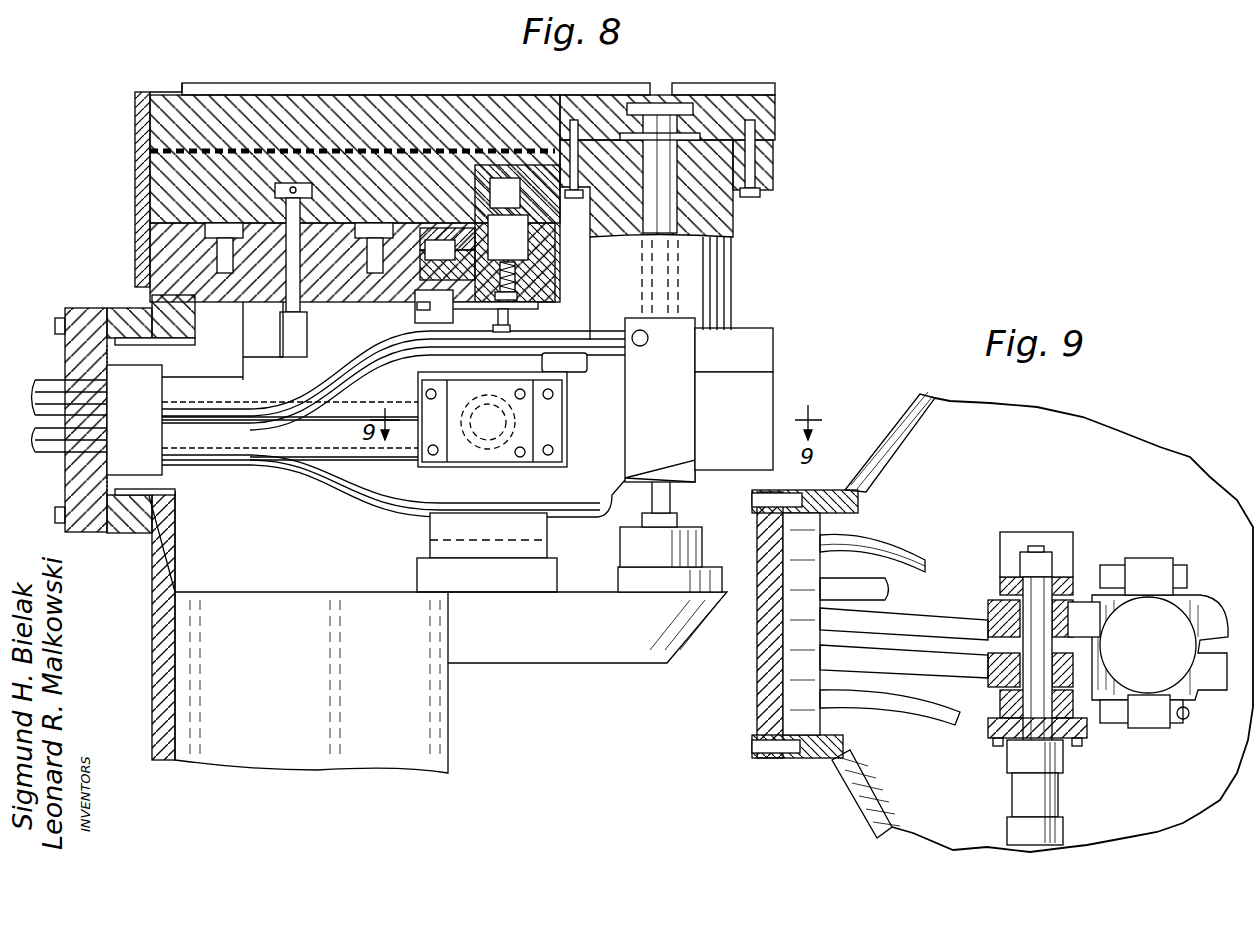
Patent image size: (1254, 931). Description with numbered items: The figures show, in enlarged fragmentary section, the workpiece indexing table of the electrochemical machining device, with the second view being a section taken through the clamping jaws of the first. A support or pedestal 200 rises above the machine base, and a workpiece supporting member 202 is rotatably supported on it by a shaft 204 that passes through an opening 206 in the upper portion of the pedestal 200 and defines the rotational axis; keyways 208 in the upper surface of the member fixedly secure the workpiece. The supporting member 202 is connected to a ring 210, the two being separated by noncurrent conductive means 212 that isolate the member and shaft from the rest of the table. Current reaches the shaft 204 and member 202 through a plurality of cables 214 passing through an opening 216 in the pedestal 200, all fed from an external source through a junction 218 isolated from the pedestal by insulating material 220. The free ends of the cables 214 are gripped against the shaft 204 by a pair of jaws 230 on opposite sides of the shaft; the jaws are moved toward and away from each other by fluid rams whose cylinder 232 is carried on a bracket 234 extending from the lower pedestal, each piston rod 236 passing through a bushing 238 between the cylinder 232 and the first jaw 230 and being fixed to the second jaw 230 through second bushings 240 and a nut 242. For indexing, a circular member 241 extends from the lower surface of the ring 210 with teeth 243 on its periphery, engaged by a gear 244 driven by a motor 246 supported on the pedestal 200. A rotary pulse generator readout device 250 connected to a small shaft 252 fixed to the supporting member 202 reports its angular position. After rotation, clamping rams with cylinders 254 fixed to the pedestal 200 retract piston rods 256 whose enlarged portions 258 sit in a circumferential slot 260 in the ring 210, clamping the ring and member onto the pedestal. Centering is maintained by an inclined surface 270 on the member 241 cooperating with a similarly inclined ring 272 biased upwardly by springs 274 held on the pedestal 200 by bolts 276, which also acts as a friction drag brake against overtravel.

In FIG. 8, the support or pedestal 200 is at (178, 548).
In FIG. 9, the support or pedestal 200 is at (918, 410).
In FIG. 8, the workpiece supporting member 202 is at (205, 72).
In FIG. 8, the shaft 204 is at (733, 267).
In FIG. 8, the opening 206 is at (603, 197).
In FIG. 8, the keyways 208 is at (742, 80).
In FIG. 8, the ring 210 is at (240, 216).
In FIG. 8, the noncurrent conductive means 212 is at (150, 152).
In FIG. 8, the cables 214 is at (185, 393).
In FIG. 9, the cables 214 is at (878, 545).
In FIG. 8, the opening 216 is at (155, 485).
In FIG. 8, the junction 218 is at (82, 523).
In FIG. 8, the insulating material 220 is at (125, 533).
In FIG. 8, the jaws 230 is at (770, 388).
In FIG. 9, the jaws 230 is at (1195, 595).
In FIG. 9, the cylinder 232 is at (1018, 793).
In FIG. 8, the bracket 234 is at (440, 542).
In FIG. 9, the bracket 234 is at (995, 730).
In FIG. 9, the piston rod 236 is at (1030, 585).
In FIG. 9, the bushing 238 is at (1075, 712).
In FIG. 9, the second bushings 240 is at (1068, 600).
In FIG. 8, the circular member 241 is at (462, 200).
In FIG. 9, the nut 242 is at (1035, 560).
In FIG. 8, the teeth 243 is at (470, 235).
In FIG. 8, the gear 244 is at (425, 250).
In FIG. 8, the motor 246 is at (415, 318).
In FIG. 8, the rotary pulse generator readout device 250 is at (655, 583).
In FIG. 8, the small shaft 252 is at (663, 198).
In FIG. 8, the cylinders 254 is at (258, 362).
In FIG. 8, the piston rods 256 is at (285, 285).
In FIG. 8, the enlarged portions 258 is at (275, 188).
In FIG. 8, the circumferential slot 260 is at (292, 185).
In FIG. 8, the inclined surface 270 is at (496, 230).
In FIG. 8, the ring 272 is at (515, 258).
In FIG. 8, the springs 274 is at (500, 282).
In FIG. 8, the bolts 276 is at (535, 312).